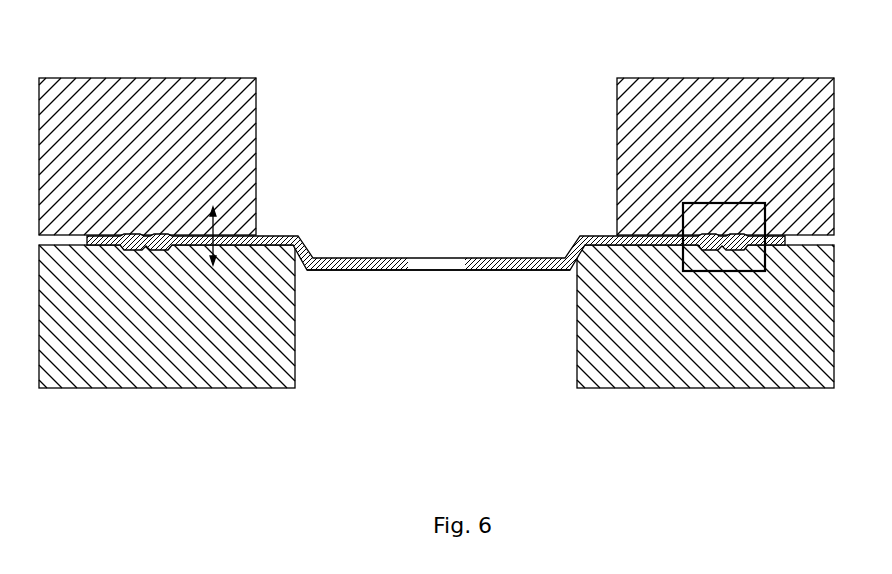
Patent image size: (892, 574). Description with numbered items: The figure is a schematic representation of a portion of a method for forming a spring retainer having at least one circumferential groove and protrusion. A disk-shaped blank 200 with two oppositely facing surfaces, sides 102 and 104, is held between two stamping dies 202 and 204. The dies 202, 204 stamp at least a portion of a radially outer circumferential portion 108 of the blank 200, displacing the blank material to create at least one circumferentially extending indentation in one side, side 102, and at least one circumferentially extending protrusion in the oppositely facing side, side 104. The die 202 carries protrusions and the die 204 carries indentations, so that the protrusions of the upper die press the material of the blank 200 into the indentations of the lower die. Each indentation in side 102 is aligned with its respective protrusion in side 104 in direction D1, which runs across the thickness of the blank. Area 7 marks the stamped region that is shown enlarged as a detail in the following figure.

The die 202 is at (178, 78).
The die 204 is at (100, 388).
The side 102 is at (420, 211).
The disk-shaped blank 200 is at (384, 257).
The side 104 is at (500, 271).
The radially outer circumferential portion 108 is at (145, 287).
The area 7 is at (683, 217).
The direction D1 is at (215, 220).